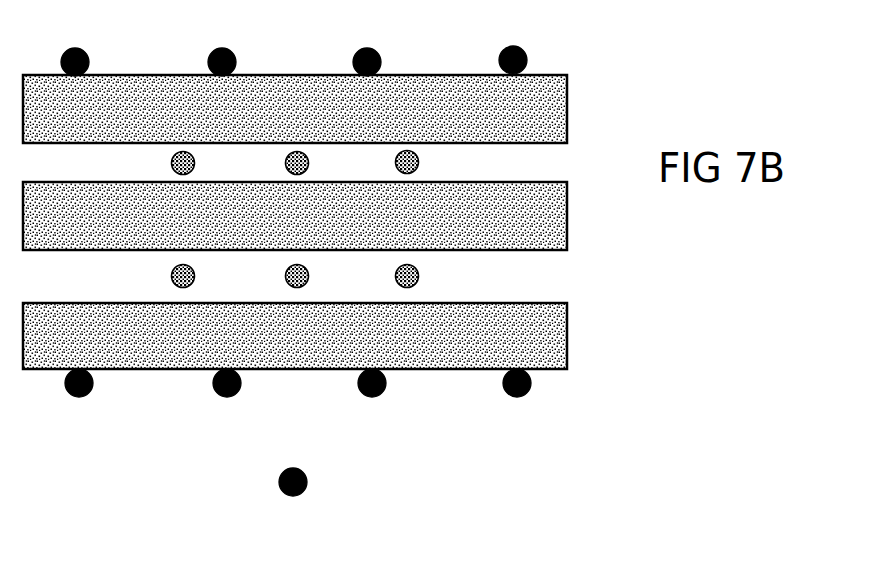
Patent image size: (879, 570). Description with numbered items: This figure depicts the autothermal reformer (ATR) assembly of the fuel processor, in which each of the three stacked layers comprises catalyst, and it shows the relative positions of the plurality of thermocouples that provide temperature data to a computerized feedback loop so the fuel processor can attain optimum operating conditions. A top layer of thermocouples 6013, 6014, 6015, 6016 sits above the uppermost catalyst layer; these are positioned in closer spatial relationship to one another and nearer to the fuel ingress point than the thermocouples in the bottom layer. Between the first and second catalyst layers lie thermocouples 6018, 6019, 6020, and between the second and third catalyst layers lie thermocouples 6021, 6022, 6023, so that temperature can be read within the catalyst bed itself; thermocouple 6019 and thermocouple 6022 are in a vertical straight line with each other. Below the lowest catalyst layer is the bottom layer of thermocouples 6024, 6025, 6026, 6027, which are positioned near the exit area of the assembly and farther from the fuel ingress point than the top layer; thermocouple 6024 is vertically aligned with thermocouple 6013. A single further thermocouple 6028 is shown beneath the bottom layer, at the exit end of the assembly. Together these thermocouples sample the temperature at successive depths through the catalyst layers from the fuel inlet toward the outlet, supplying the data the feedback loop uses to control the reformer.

The thermocouple 6013 is at (76, 47).
The thermocouple 6014 is at (221, 47).
The thermocouple 6015 is at (368, 47).
The thermocouple 6016 is at (513, 45).
The thermocouple 6018 is at (139, 165).
The thermocouple 6019 is at (259, 165).
The thermocouple 6020 is at (449, 165).
The thermocouple 6021 is at (139, 278).
The thermocouple 6022 is at (259, 278).
The thermocouple 6023 is at (448, 278).
The thermocouple 6024 is at (81, 403).
The thermocouple 6025 is at (226, 403).
The thermocouple 6026 is at (368, 403).
The thermocouple 6027 is at (516, 403).
The thermocouple 6028 is at (296, 503).